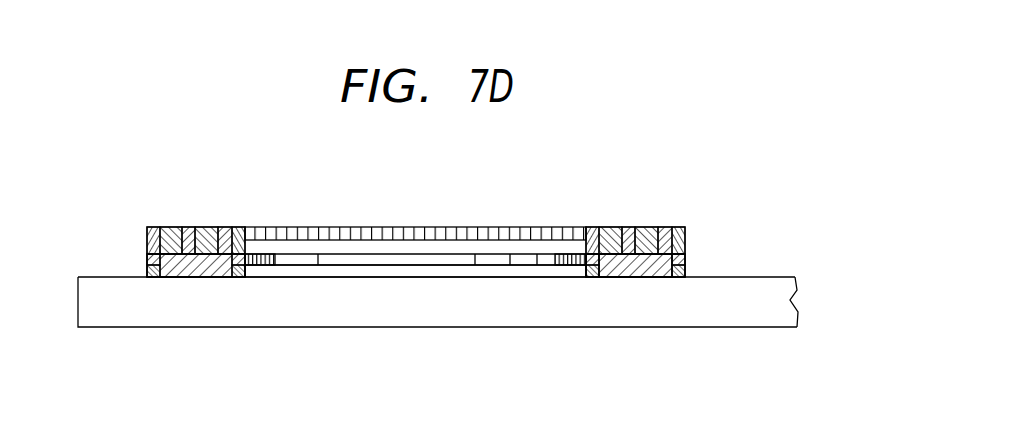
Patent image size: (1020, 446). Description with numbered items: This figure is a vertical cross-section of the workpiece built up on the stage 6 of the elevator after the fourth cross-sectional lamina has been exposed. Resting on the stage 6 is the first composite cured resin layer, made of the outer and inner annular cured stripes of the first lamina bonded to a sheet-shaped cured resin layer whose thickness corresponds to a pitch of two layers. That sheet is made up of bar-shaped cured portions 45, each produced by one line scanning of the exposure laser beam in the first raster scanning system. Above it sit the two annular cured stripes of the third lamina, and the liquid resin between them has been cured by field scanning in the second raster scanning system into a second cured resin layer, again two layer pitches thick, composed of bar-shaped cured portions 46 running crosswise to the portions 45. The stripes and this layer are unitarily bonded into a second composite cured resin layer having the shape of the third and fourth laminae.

The stage 6 is at (790, 279).
The bar-shaped cured portion 45 is at (212, 277).
The bar-shaped cured portion 46 is at (203, 227).